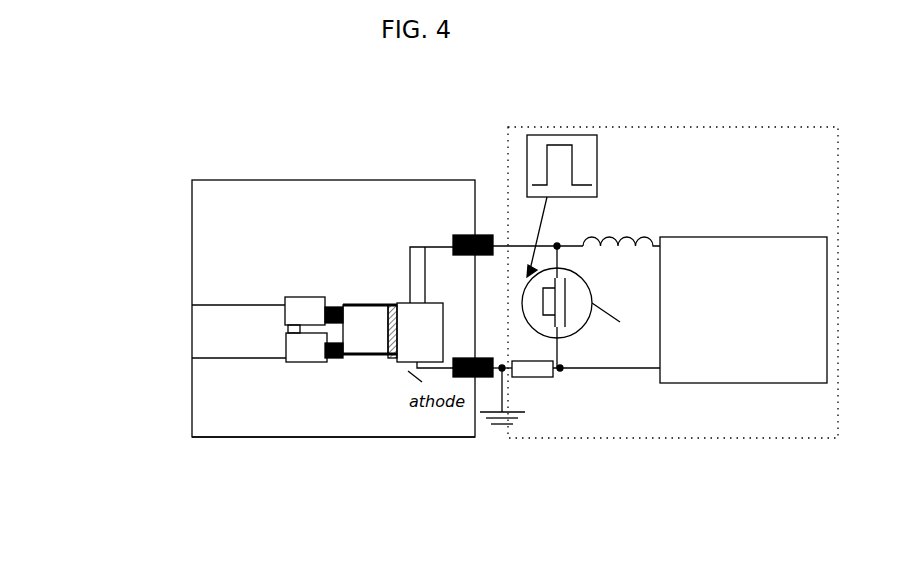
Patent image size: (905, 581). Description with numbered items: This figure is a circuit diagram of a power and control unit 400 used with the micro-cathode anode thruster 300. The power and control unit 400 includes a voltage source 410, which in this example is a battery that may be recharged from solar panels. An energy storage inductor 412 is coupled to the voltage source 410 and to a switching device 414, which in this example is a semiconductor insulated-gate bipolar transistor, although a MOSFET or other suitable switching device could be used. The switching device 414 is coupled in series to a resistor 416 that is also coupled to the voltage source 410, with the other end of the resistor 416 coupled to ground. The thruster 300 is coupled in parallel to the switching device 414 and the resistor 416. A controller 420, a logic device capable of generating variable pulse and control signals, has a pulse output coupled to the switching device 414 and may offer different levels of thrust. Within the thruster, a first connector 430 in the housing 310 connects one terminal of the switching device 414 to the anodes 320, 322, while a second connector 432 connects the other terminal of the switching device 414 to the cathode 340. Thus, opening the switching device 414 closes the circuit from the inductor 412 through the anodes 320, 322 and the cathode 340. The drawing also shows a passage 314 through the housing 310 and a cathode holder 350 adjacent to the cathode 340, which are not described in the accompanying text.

The micro-cathode anode thruster 300 is at (228, 169).
The housing 310 is at (210, 433).
The passage 314 is at (203, 322).
The anode 320 is at (315, 310).
The anode 322 is at (300, 360).
The cathode 340 is at (373, 358).
The cathode holder 350 is at (425, 303).
The power and control unit 400 is at (737, 128).
The voltage source 410 is at (777, 237).
The energy storage inductor 412 is at (632, 226).
The switching device 414 is at (583, 322).
The resistor 416 is at (543, 378).
The controller 420 is at (572, 180).
The first connector 430 is at (481, 236).
The second connector 432 is at (495, 378).